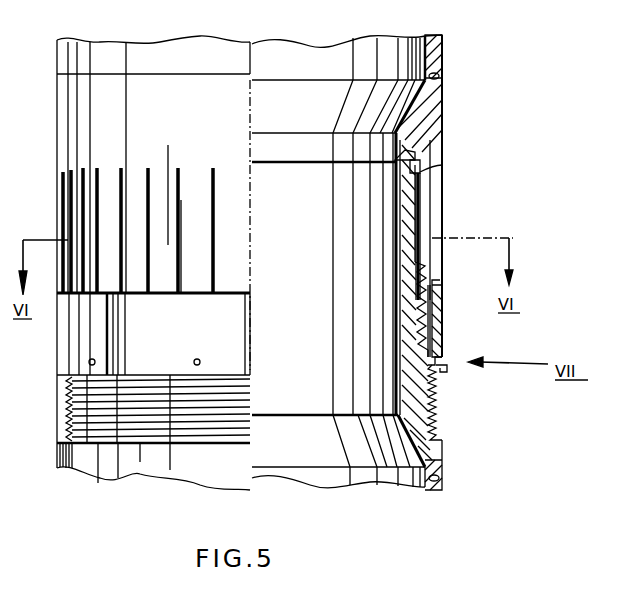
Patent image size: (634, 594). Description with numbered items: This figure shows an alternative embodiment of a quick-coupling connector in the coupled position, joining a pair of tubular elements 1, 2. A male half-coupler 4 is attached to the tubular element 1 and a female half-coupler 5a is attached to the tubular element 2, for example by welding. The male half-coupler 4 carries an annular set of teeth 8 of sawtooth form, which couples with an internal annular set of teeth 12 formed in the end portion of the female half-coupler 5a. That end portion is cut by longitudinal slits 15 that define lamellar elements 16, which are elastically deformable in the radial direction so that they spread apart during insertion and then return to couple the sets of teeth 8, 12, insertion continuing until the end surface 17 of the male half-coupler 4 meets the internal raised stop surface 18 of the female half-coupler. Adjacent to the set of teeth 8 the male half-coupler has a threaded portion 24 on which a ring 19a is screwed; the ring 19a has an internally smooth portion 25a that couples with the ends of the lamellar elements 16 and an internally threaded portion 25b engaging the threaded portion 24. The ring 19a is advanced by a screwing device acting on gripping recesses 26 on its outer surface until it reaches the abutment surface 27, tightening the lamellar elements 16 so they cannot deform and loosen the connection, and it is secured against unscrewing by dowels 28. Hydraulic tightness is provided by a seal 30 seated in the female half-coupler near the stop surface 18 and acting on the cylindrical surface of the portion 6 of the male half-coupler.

The tubular element 1 is at (388, 478).
The tubular element 2 is at (445, 52).
The male half-coupler 4 is at (408, 390).
The female half-coupler 5a is at (432, 128).
The portion of the male half-coupler 6 is at (393, 193).
The annular set of teeth 8 is at (417, 290).
The internal annular set of teeth 12 is at (430, 305).
The longitudinal slits 15 is at (97, 172).
The lamellar elements 16 is at (190, 202).
The end surface 17 is at (422, 188).
The internal raised stop surface 18 is at (412, 153).
The ring 19a is at (68, 332).
The threaded portion 24 is at (118, 415).
The internally smooth portion 25a is at (427, 313).
The internally threaded portion 25b is at (438, 368).
The gripping recesses 26 is at (113, 357).
The abutment surface 27 is at (432, 285).
The dowels 28 is at (432, 360).
The seal 30 is at (422, 163).